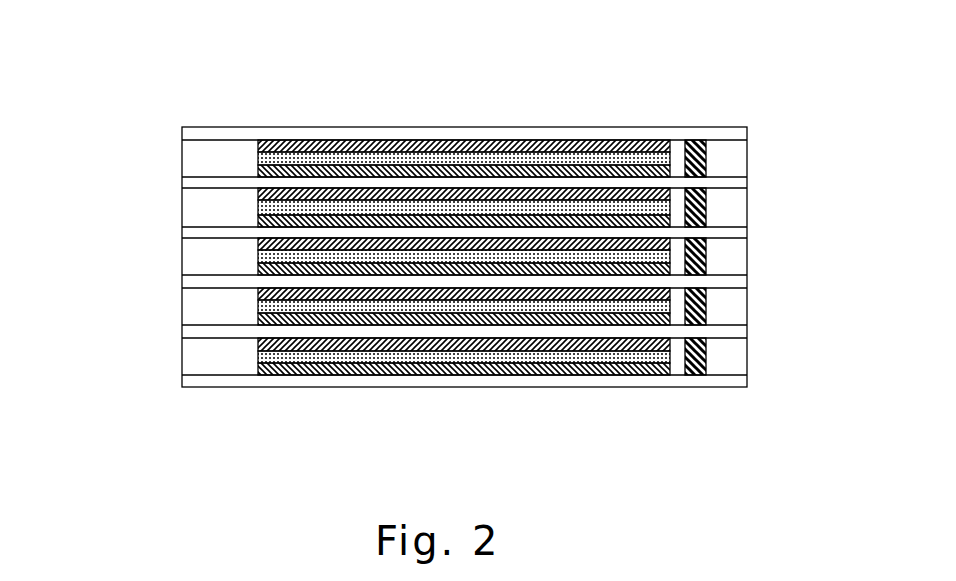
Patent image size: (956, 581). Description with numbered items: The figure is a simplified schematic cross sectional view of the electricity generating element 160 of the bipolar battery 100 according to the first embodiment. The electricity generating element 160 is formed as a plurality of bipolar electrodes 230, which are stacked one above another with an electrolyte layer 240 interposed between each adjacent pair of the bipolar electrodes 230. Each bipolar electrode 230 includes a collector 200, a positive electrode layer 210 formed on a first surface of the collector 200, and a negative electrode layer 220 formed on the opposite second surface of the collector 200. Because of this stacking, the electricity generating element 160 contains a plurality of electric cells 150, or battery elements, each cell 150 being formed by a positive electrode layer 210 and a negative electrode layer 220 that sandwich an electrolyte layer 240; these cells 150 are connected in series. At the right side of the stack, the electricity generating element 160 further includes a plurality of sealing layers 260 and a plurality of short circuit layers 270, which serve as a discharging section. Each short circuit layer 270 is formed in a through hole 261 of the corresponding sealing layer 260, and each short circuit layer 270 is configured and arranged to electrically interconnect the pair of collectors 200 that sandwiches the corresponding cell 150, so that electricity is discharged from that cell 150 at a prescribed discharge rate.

The bipolar battery 100 is at (212, 66).
The electricity generating element 160 is at (322, 120).
The electric cell 150 is at (110, 322).
The bipolar electrode 230 is at (90, 170).
The collector 200 is at (182, 235).
The positive electrode layer 210 is at (481, 146).
The negative electrode layer 220 is at (260, 225).
The electrolyte layer 240 is at (258, 306).
The sealing layer 260 is at (728, 163).
The through hole 261 is at (697, 378).
The short circuit layer 270 is at (706, 360).